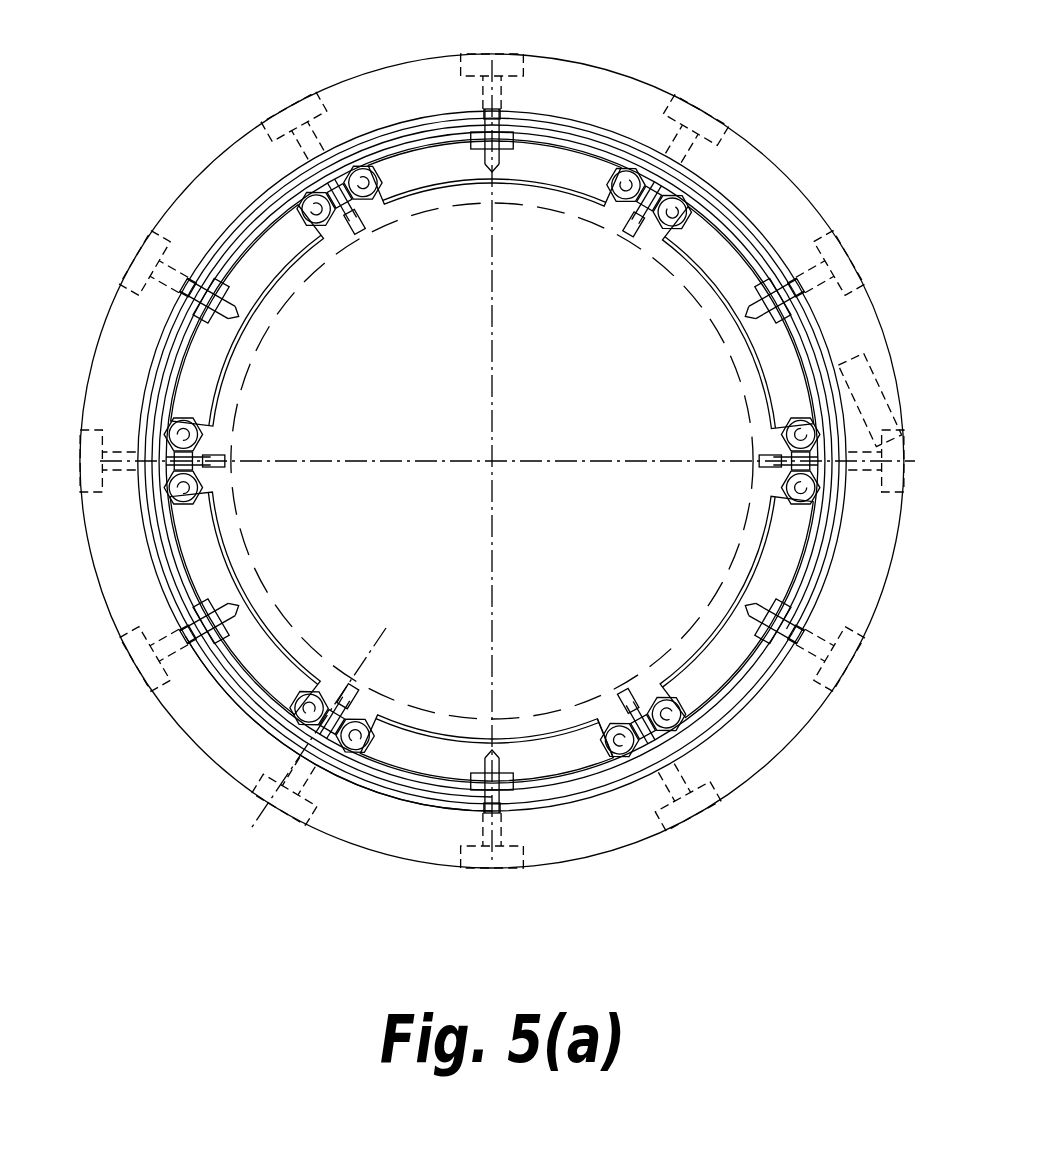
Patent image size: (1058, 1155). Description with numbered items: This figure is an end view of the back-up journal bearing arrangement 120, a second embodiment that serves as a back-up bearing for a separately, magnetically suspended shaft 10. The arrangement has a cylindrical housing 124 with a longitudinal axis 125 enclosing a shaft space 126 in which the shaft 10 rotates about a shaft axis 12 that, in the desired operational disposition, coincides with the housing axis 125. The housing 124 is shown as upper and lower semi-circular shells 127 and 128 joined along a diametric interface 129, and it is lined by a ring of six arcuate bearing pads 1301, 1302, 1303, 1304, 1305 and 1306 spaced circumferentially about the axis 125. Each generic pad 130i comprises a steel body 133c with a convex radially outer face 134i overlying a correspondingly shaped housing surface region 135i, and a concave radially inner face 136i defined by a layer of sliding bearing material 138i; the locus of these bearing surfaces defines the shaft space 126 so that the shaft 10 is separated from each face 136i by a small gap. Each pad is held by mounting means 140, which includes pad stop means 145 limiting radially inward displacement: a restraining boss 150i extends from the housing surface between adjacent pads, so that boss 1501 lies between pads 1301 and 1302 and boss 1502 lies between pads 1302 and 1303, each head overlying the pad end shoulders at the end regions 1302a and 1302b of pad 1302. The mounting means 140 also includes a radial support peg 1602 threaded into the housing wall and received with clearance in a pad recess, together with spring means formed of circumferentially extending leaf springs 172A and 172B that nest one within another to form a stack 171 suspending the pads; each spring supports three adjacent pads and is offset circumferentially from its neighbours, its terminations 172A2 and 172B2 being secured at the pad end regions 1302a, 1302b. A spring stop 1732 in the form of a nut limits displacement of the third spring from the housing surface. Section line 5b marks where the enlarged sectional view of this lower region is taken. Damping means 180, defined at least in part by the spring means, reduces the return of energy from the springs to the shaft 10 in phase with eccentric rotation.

The journal bearing arrangement 120 is at (226, 118).
The housing 124 is at (758, 145).
The shaft space 126 is at (597, 200).
The upper semi-circular shell 127 is at (886, 350).
The lower semi-circular shell 128 is at (894, 400).
The diametric interface 129 is at (896, 372).
The damping means 180 is at (826, 600).
The longitudinal axis 125 is at (488, 458).
The shaft axis 12 is at (520, 460).
The shaft 10 is at (598, 340).
The bearing pad 1305 is at (396, 174).
The bearing pad 1304 is at (782, 360).
The bearing pad 1306 is at (194, 376).
The bearing pad 1301 is at (260, 727).
The bearing pad 1302 is at (557, 755).
The pad end region 1302a is at (389, 734).
The pad end region 1302b is at (588, 738).
The bearing pad 1303 is at (782, 535).
The arcuate bearing pad 130i is at (289, 611).
The restraining boss 1501 is at (364, 735).
The restraining boss 1502 is at (699, 744).
The restraining boss 150i is at (626, 686).
The pad stop means 145 is at (642, 658).
The radially inner face 136i is at (204, 527).
The layer of sliding bearing material 138i is at (226, 565).
The steel body 133c is at (138, 612).
The radially outer face 134i is at (272, 676).
The housing surface region 135i is at (290, 735).
The section line 5b is at (378, 644).
The spring stop 1732 is at (508, 772).
The support peg 1602 is at (467, 822).
The mounting means 140 is at (352, 803).
The spring stack 171 is at (427, 802).
The leaf spring 172A is at (383, 766).
The spring termination 172A2 is at (363, 758).
The leaf spring 172B is at (582, 768).
The spring termination 172B2 is at (640, 758).